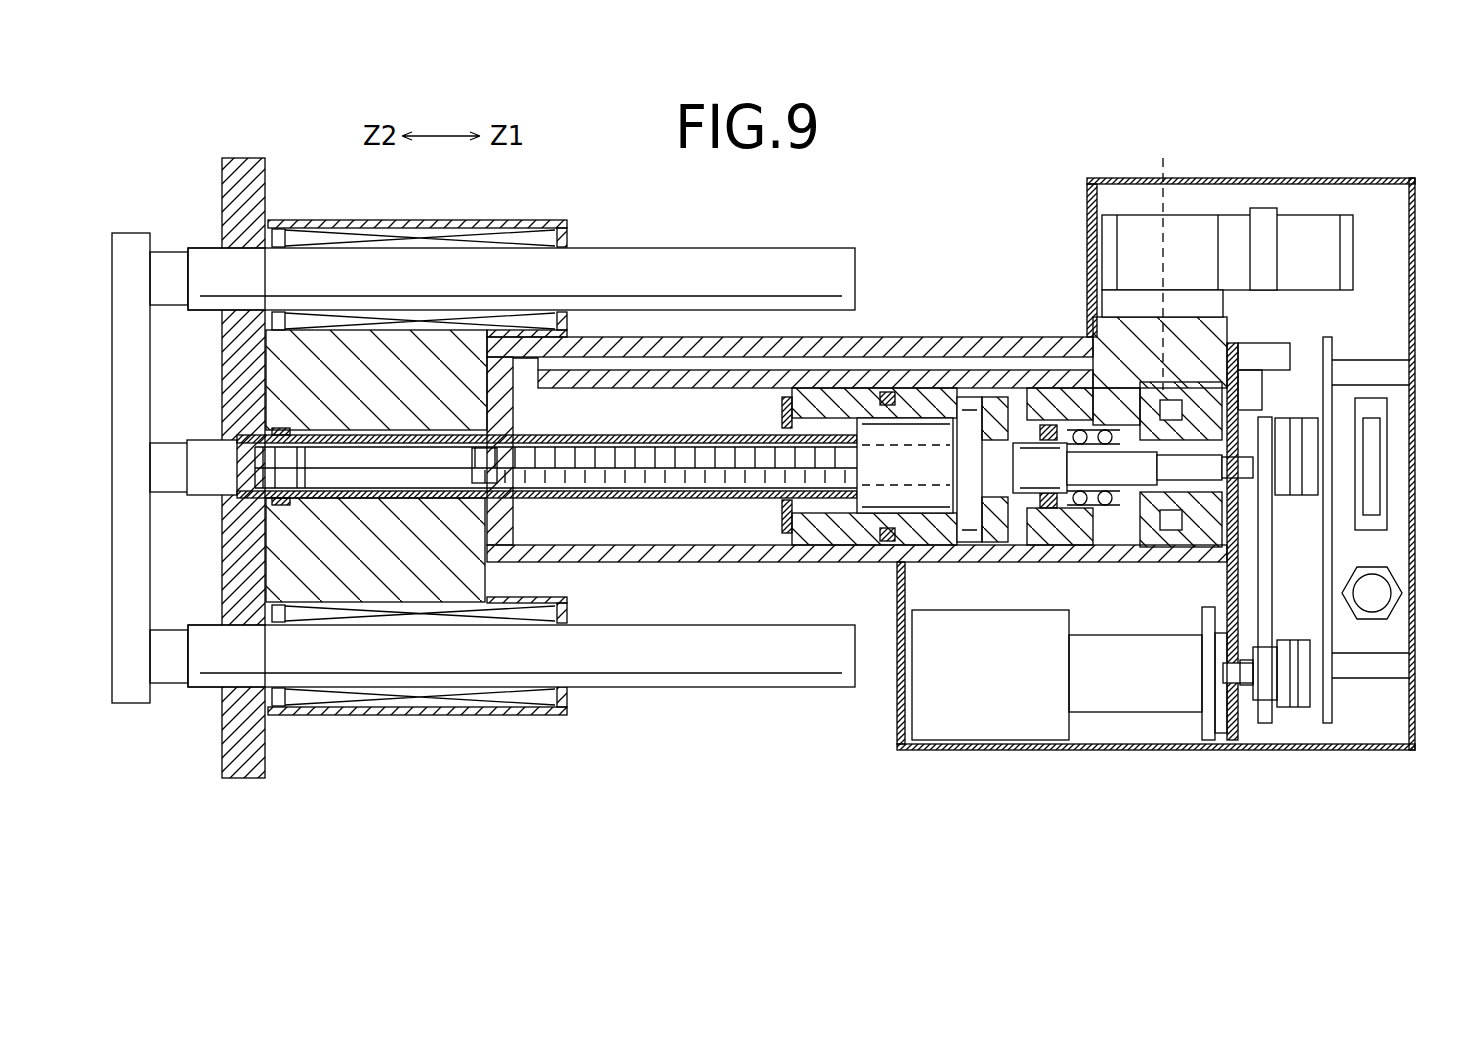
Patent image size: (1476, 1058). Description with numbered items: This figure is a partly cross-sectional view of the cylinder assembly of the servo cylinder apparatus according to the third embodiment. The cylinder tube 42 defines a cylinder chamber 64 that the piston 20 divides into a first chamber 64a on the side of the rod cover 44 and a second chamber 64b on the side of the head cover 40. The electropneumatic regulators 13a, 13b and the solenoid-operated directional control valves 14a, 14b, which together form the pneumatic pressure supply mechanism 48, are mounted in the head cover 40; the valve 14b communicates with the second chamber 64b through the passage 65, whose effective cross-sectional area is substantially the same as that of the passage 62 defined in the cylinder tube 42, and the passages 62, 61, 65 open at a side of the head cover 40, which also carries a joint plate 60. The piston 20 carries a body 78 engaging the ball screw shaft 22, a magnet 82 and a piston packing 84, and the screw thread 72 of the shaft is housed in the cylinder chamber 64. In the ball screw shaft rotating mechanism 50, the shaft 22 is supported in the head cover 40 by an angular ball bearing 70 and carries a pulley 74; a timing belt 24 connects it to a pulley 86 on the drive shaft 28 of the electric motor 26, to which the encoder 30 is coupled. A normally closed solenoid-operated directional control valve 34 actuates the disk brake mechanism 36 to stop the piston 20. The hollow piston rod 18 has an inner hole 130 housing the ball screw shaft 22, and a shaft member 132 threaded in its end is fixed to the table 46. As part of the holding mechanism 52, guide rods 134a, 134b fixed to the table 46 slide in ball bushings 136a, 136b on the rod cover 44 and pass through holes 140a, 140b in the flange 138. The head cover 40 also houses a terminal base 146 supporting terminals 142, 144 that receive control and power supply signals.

The solenoid-operated directional control valve 14a is at (1251, 194).
The solenoid-operated directional control valve 14b is at (1251, 194).
The electropneumatic regulator 13a is at (1251, 194).
The electropneumatic regulator 13b is at (1300, 230).
The piston rod 18 is at (440, 445).
The piston 20 is at (815, 545).
The ball screw shaft 22 is at (1068, 545).
The timing belt 24 is at (1267, 552).
The electric motor 26 is at (1127, 692).
The drive shaft 28 is at (1242, 678).
The encoder 30 is at (998, 713).
The normally closed solenoid-operated directional control valve 34 is at (1280, 352).
The disk brake mechanism 36 is at (1093, 320).
The head cover 40 is at (1400, 175).
The cylinder tube 42 is at (914, 323).
The rod cover 44 is at (349, 601).
The table 46 is at (135, 398).
The pneumatic pressure supply mechanism 48 is at (1055, 357).
The ball screw shaft rotating mechanism 50 is at (1295, 724).
The holding mechanism 52 is at (504, 215).
The joint plate 60 is at (1190, 298).
The passage 61 is at (1137, 297).
The passage 62 is at (782, 363).
The cylinder chamber 64 is at (712, 413).
The first chamber 64a is at (668, 433).
The second chamber 64b is at (1010, 357).
The passage 65 is at (1180, 160).
The angular ball bearing 70 is at (1118, 548).
The screw thread 72 is at (684, 470).
The pulley 74 is at (1280, 467).
The body 78 is at (880, 530).
The magnet 82 is at (892, 357).
The piston packing 84 is at (915, 358).
The pulley 86 is at (1277, 678).
The inner hole 130 is at (422, 460).
The shaft member 132 is at (222, 481).
The guide rod 134a is at (625, 283).
The guide rod 134b is at (612, 660).
The ball bushing 136a is at (414, 236).
The ball bushing 136b is at (400, 700).
The flange 138 is at (257, 190).
The hole 140a is at (218, 255).
The hole 140b is at (223, 668).
The terminal 142 is at (1375, 440).
The terminal 144 is at (1380, 588).
The terminal base 146 is at (1377, 633).